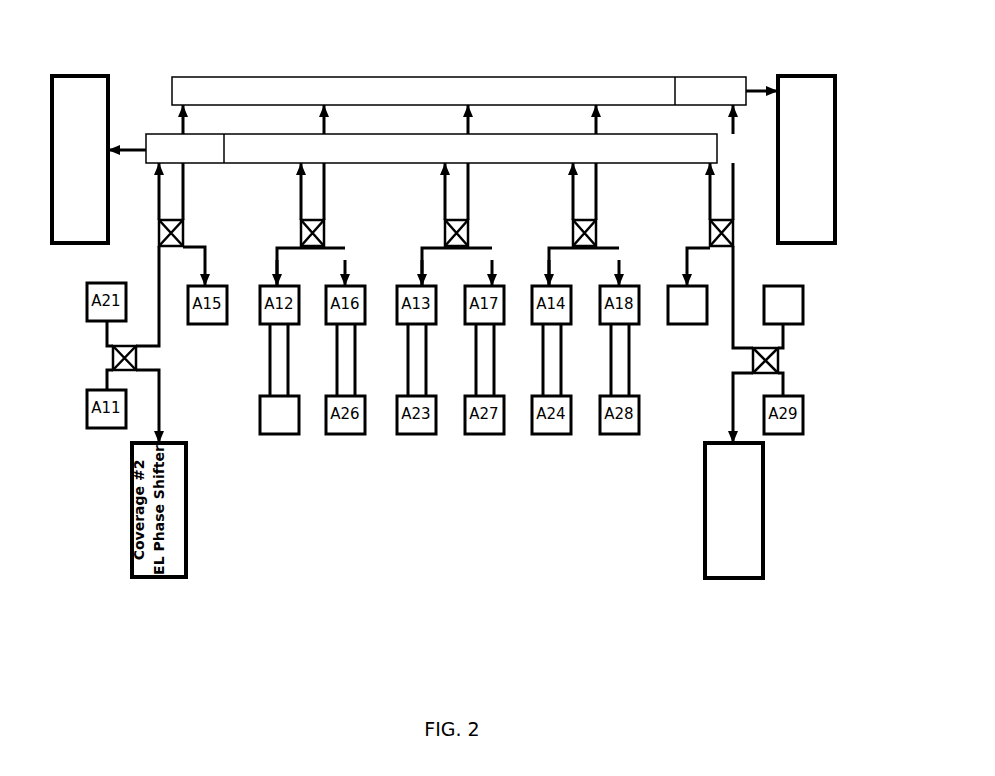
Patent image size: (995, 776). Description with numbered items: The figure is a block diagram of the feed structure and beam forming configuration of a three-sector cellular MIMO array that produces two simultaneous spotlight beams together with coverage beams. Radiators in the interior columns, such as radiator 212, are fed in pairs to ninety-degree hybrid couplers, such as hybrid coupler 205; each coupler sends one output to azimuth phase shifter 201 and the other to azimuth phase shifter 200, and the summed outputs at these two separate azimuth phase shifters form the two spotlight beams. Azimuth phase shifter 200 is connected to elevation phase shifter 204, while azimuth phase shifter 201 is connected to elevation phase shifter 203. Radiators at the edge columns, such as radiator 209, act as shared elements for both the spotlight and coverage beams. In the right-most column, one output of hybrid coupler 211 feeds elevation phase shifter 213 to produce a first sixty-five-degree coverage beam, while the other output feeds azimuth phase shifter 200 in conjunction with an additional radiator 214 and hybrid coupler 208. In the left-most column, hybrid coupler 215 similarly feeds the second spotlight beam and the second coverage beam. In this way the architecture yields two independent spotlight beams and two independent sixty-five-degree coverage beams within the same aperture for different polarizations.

The azimuth phase shifter 200 is at (448, 77).
The azimuth phase shifter 201 is at (285, 134).
The elevation phase shifter 203 is at (86, 76).
The elevation phase shifter 204 is at (808, 76).
The hybrid coupler 205 is at (301, 231).
The hybrid coupler 208 is at (710, 229).
The radiator 209 is at (803, 303).
The hybrid coupler 211 is at (778, 365).
The radiator 212 is at (260, 413).
The elevation phase shifter 213 is at (768, 562).
The radiator 214 is at (690, 327).
The hybrid coupler 215 is at (112, 357).